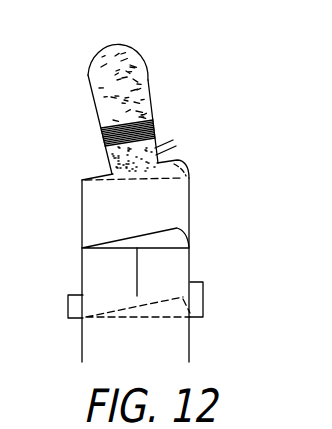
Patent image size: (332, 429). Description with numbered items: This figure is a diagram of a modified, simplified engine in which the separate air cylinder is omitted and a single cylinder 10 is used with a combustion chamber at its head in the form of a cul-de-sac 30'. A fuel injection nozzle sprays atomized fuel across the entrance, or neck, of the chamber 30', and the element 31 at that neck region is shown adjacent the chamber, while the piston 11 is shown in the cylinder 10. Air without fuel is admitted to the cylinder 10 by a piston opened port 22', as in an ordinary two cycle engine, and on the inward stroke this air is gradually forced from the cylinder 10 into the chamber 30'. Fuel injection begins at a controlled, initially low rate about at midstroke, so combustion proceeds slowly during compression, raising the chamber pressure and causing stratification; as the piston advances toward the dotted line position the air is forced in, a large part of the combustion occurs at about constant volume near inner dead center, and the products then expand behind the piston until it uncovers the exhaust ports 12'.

The cylinder 10 is at (136, 261).
The closure flap 11 is at (168, 253).
The exhaust ports 12' is at (55, 292).
The piston opened port 22' is at (222, 285).
The cul-de-sac combustion chamber 30' is at (146, 106).
The attachment strip 31 is at (158, 147).